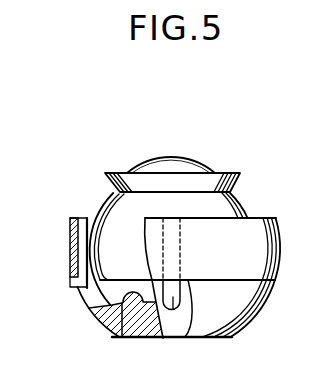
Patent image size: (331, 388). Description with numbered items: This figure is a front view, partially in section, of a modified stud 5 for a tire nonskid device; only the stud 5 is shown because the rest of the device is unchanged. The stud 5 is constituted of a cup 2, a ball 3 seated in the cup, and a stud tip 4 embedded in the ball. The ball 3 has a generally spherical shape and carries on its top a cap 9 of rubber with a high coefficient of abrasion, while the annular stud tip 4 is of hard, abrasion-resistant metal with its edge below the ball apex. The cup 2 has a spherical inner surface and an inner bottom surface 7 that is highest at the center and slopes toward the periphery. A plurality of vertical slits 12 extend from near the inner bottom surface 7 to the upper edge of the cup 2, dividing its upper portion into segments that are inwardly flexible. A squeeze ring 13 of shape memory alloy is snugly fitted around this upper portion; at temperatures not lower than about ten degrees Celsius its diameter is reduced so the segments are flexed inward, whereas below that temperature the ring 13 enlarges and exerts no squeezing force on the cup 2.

The cup 2 is at (92, 320).
The ball 3 is at (241, 201).
The stud tip 4 is at (225, 173).
The stud 5 is at (251, 173).
The inner bottom surface 7 is at (122, 341).
The cap 9 is at (151, 160).
The vertical slits 12 is at (85, 287).
The squeeze ring 13 is at (266, 250).